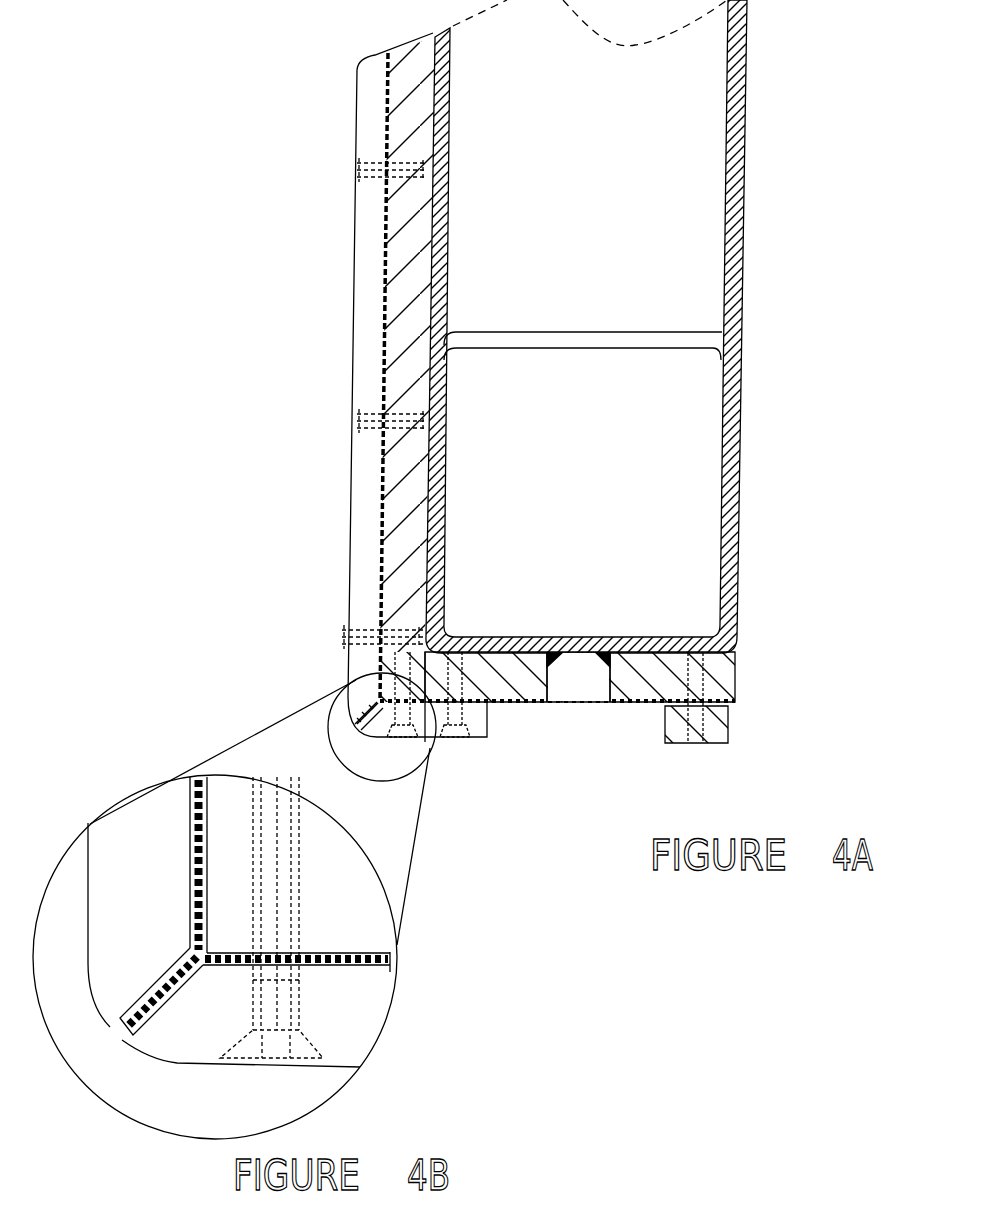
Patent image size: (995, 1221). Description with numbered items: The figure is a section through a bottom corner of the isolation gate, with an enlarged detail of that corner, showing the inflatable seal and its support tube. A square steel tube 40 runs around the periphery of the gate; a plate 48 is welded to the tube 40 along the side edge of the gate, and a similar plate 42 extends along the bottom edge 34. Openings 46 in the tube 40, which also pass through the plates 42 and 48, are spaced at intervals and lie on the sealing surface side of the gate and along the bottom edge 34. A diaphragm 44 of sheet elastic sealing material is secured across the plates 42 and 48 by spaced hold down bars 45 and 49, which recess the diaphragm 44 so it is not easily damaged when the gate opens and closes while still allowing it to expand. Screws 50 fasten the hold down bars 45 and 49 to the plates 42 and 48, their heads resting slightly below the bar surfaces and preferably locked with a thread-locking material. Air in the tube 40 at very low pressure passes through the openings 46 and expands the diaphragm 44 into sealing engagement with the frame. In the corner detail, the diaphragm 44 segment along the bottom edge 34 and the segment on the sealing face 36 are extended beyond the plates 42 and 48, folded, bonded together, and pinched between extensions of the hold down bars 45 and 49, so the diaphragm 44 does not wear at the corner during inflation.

In FIG. 4A, the bottom edge 34 is at (697, 745).
In FIG. 4A, the sealing face 36 is at (353, 322).
In FIG. 4A, the square steel tube 40 is at (680, 467).
In FIG. 4A, the plate 42 is at (492, 705).
In FIG. 4A, the diaphragm 44 is at (380, 448).
In FIG. 4B, the diaphragm 44 is at (255, 906).
In FIG. 4A, the hold down bar 45 is at (482, 705).
In FIG. 4B, the hold down bar 45 is at (177, 1050).
In FIG. 4A, the opening 46 is at (578, 640).
In FIG. 4A, the plate 48 is at (400, 468).
In FIG. 4A, the hold down bar 49 is at (363, 588).
In FIG. 4B, the hold down bar 49 is at (123, 823).
In FIG. 4A, the screw 50 is at (357, 175).
In FIG. 4B, the screw 50 is at (283, 1020).